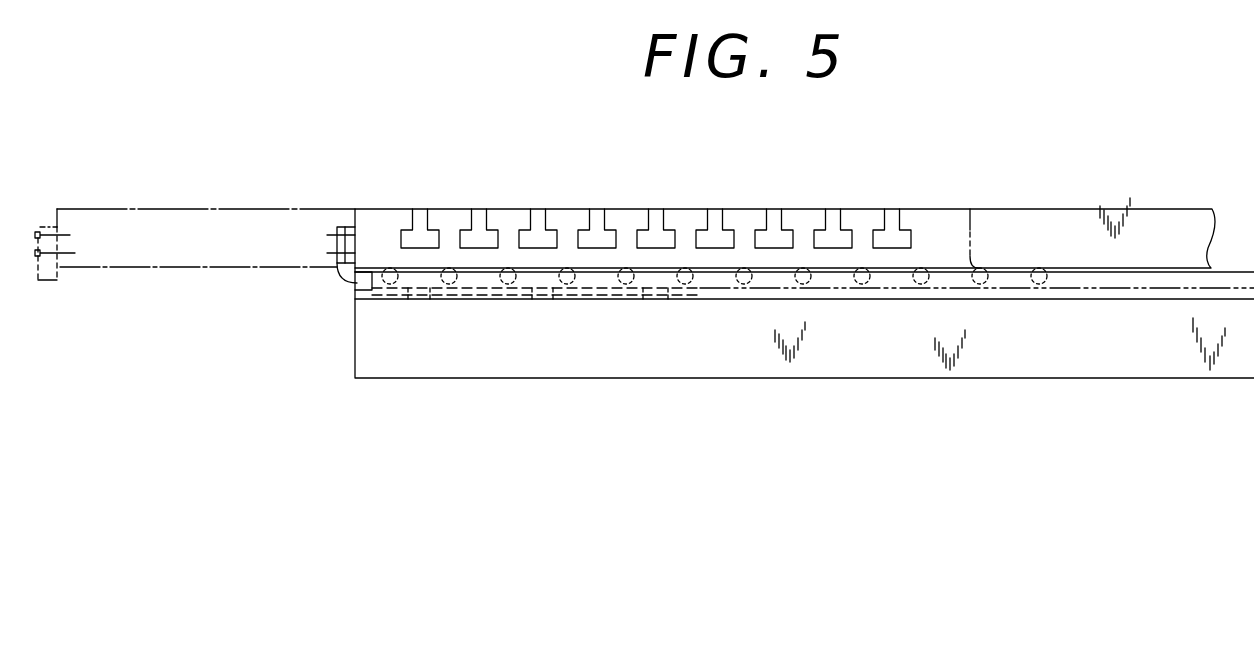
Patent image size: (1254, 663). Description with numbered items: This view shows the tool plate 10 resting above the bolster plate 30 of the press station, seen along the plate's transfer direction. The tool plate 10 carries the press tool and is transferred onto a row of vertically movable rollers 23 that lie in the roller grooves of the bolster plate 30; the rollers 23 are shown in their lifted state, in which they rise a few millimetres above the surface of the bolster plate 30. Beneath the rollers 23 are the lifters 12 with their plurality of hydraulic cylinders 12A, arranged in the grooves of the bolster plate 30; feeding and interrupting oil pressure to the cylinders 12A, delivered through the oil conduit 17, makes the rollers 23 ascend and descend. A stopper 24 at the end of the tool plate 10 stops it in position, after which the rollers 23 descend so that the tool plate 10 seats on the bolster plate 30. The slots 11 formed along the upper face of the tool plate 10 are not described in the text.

The tool plate 10 is at (686, 219).
The T-shaped slot 11 is at (831, 220).
The lifter 12 is at (579, 298).
The hydraulic cylinder 12A is at (542, 299).
The oil conduit 17 is at (353, 298).
The vertically movable roller 23 is at (449, 268).
The stopper 24 is at (347, 243).
The bolster plate 30 is at (876, 347).